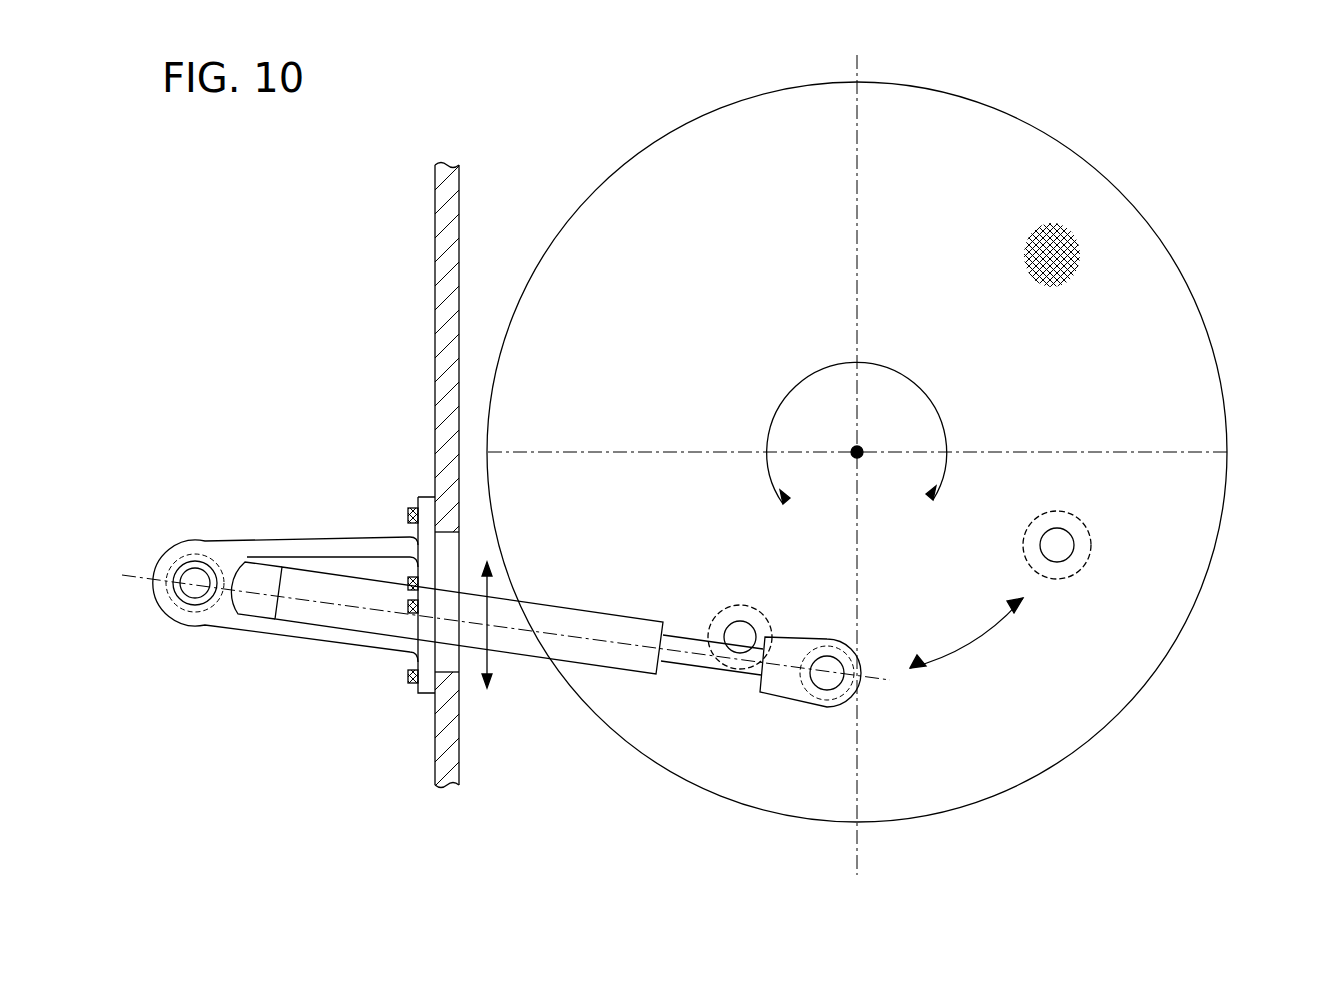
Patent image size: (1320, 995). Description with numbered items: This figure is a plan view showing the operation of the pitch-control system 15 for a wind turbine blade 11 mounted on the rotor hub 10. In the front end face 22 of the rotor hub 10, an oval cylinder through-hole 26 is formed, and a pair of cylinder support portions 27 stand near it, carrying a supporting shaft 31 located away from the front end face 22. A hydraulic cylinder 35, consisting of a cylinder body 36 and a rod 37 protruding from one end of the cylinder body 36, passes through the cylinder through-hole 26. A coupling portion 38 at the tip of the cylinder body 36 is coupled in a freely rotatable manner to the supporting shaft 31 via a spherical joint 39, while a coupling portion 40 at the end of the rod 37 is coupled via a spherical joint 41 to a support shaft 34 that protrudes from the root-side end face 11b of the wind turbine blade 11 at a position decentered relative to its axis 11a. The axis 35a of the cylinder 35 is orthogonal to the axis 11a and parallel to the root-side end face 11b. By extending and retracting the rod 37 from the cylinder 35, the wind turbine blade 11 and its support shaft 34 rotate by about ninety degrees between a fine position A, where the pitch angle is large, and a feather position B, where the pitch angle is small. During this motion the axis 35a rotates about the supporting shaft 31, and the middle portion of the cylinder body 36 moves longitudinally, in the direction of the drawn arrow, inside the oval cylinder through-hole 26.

The rotor hub 10 is at (371, 475).
The front end face 22 is at (433, 232).
The wind turbine blade 11 is at (858, 465).
The axis 11a is at (850, 445).
The root-side end face 11b is at (1068, 231).
The interlocking mechanism 15 is at (283, 365).
The cylinder through-hole 26 is at (408, 562).
The cylinder support portion 27 is at (273, 580).
The supporting shaft 31 is at (192, 560).
The support shaft 34 is at (795, 688).
The cylinder 35 is at (602, 690).
The axis 35a is at (578, 640).
The cylinder body 36 is at (469, 667).
The rod 37 is at (690, 690).
The coupling portion 38 is at (258, 603).
The spherical joint 39 is at (162, 617).
The coupling portion 40 is at (917, 672).
The spherical joint 41 is at (842, 708).
The fine position A is at (737, 605).
The feather position B is at (1085, 535).